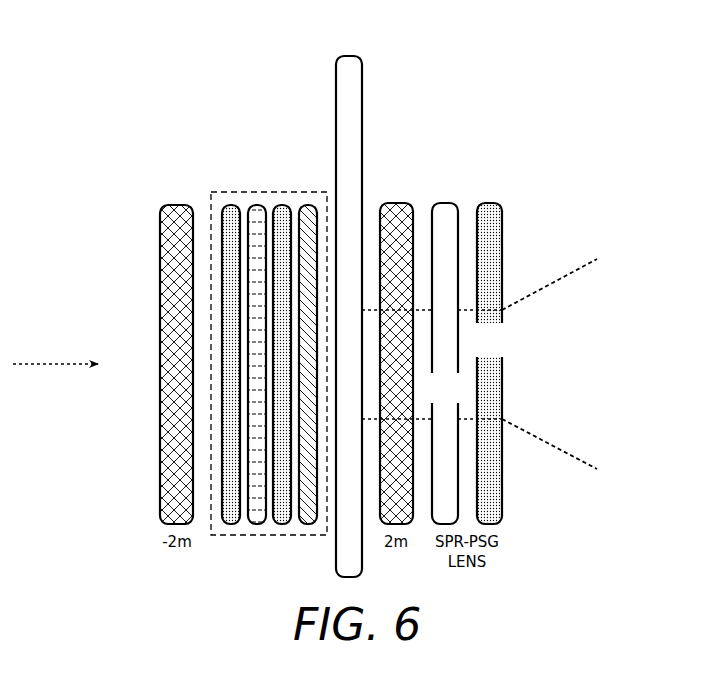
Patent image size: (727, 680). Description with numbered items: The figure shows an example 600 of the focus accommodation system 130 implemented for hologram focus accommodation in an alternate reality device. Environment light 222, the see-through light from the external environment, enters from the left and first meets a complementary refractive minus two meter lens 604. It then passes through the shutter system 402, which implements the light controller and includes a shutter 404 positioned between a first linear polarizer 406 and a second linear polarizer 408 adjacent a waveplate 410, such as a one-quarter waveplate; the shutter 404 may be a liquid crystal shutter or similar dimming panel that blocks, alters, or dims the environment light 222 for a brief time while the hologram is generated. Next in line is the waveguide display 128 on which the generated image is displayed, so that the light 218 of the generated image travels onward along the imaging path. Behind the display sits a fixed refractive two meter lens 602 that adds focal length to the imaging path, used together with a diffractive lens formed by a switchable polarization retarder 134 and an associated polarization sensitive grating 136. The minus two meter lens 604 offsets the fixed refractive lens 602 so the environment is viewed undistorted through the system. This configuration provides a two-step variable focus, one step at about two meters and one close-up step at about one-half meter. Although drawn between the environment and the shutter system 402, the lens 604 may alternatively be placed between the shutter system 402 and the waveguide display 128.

The waveguide display 128 is at (362, 112).
The focus accommodation system 130 is at (540, 212).
The switchable polarization retarder 134 is at (447, 203).
The polarization sensitive grating 136 is at (490, 203).
The light of the generated image 218 is at (552, 443).
The environment light 222 is at (41, 351).
The shutter system 402 is at (210, 227).
The shutter 404 is at (256, 205).
The first linear polarizer 406 is at (230, 523).
The second linear polarizer 408 is at (282, 523).
The waveplate 410 is at (308, 205).
The example of the focus accommodation system 600 is at (540, 80).
The fixed refractive two meter lens 602 is at (400, 203).
The complementary refractive minus two meter lens 604 is at (162, 262).